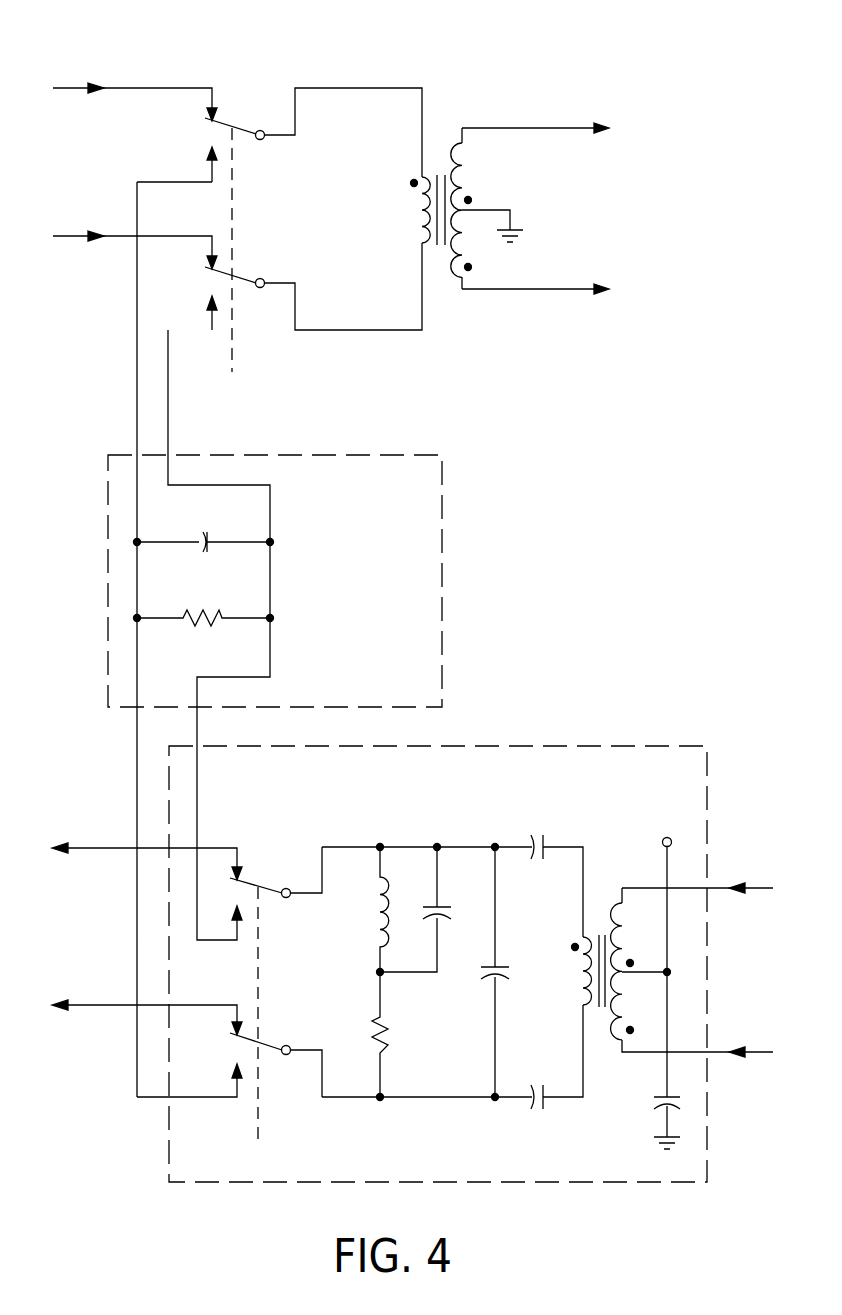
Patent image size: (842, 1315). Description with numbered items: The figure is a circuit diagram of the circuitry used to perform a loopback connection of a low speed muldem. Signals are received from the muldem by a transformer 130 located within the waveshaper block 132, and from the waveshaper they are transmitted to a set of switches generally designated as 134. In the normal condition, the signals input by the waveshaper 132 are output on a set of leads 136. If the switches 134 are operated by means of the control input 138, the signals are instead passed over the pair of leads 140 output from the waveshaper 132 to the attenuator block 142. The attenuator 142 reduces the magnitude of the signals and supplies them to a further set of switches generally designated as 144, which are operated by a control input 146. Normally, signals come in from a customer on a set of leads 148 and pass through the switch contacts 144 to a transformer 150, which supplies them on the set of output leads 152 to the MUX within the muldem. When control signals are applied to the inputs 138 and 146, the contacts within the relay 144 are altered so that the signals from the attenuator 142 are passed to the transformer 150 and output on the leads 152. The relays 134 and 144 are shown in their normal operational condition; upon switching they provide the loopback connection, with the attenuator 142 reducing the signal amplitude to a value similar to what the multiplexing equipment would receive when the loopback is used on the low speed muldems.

The transformer 130 is at (625, 838).
The waveshaper block 132 is at (592, 746).
The set of switches 134 is at (273, 862).
The set of leads 136 is at (97, 848).
The control input 138 is at (258, 1128).
The leads 140 is at (137, 786).
The attenuator block 142 is at (442, 535).
The set of switches 144 is at (243, 85).
The control input 146 is at (232, 346).
The set of leads 148 is at (80, 88).
The transformer 150 is at (462, 78).
The set of output leads 152 is at (572, 130).